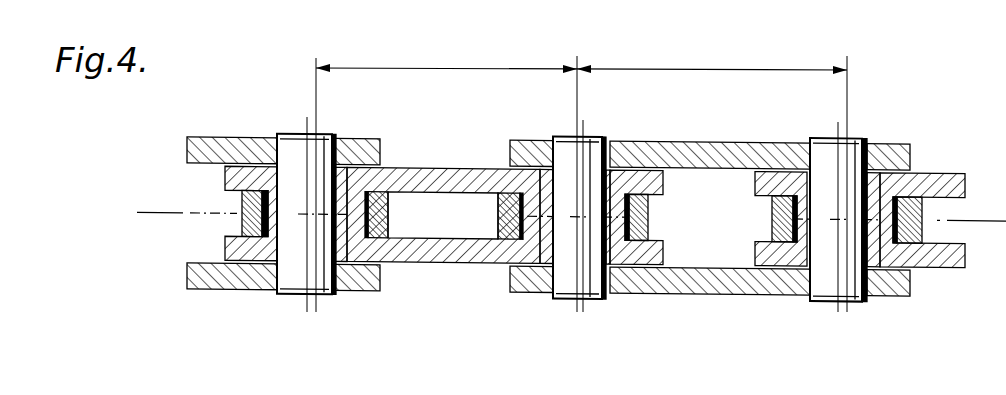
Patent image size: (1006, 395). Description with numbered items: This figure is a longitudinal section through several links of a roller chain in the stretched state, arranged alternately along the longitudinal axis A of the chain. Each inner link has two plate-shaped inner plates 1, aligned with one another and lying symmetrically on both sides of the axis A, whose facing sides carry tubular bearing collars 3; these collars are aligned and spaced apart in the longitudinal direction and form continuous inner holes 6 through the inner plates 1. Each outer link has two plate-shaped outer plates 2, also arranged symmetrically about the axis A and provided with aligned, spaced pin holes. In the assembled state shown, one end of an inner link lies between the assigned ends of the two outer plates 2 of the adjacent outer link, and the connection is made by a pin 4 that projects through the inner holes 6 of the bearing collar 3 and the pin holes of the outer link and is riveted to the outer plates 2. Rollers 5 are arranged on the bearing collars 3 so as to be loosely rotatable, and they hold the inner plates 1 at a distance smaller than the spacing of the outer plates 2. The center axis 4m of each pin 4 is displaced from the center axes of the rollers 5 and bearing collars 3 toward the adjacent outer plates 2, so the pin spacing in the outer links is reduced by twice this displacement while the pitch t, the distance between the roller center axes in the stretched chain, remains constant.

The inner plate 1 is at (437, 253).
The outer plate 2 is at (208, 146).
The bearing collar 3 is at (240, 198).
The pin 4 is at (293, 272).
The roller 5 is at (249, 230).
The inner hole 6 is at (344, 248).
The center axis of the pin 4m is at (307, 120).
The pitch of the rollers t is at (581, 57).
The longitudinal axis of the roller chain A is at (165, 216).